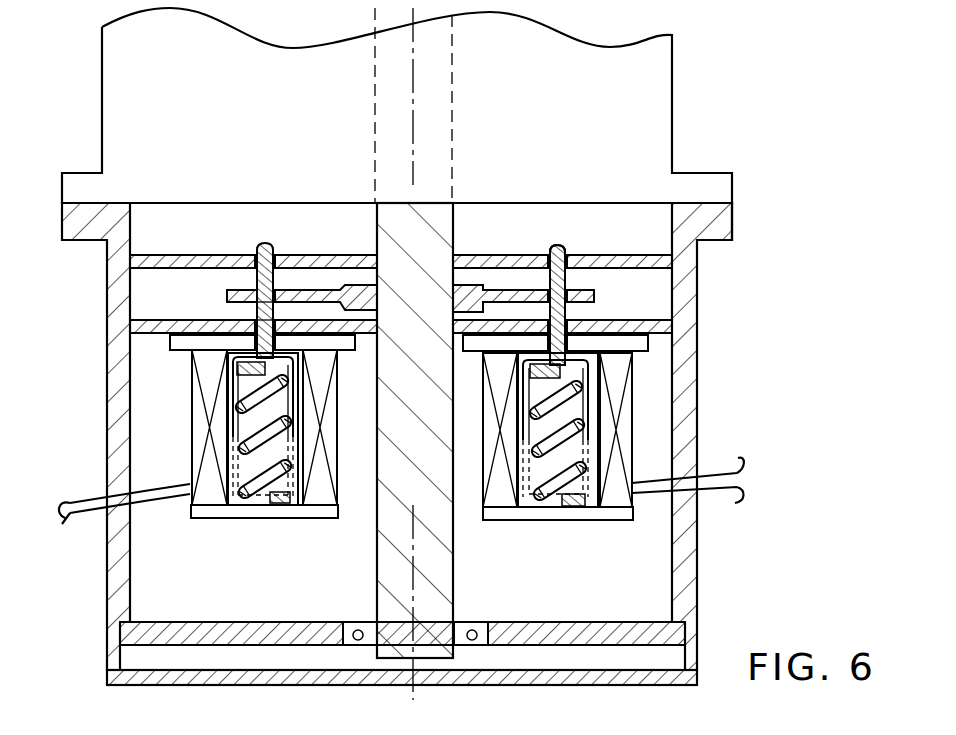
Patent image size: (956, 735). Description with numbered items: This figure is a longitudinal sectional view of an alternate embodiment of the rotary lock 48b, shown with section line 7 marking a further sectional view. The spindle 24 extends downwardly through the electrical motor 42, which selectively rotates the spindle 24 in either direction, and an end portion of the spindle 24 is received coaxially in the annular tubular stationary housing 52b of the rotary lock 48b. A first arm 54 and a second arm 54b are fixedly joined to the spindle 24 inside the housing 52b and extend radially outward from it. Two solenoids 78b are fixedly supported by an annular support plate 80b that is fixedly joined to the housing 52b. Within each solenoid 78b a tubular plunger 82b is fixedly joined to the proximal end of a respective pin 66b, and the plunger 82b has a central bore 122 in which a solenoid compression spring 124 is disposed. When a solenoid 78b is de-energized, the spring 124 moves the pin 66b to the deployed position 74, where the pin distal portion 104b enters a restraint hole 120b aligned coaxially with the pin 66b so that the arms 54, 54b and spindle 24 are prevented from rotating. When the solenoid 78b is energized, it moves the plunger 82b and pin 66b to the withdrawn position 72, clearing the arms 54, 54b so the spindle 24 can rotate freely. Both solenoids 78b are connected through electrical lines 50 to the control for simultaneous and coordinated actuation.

The section line 7- 7 is at (68, 277).
The spindle 24 is at (408, 38).
The electrical motor 42 is at (684, 118).
The rotary lock 48b is at (98, 586).
The electrical lines 50 is at (65, 502).
The stationary housing 52b is at (698, 267).
The first arm 54 is at (232, 290).
The second arm 54b is at (595, 297).
The pin 66b is at (279, 246).
The withdrawn position 72 is at (258, 308).
The deployed position 74 is at (560, 234).
The solenoid 78b is at (212, 519).
The annular support plate 80b is at (663, 340).
The tubular plunger 82b is at (530, 419).
The distal portion 104b is at (547, 248).
The restraint hole 120b is at (257, 256).
The central bore 122 is at (586, 406).
The solenoid compression spring 124 is at (553, 506).